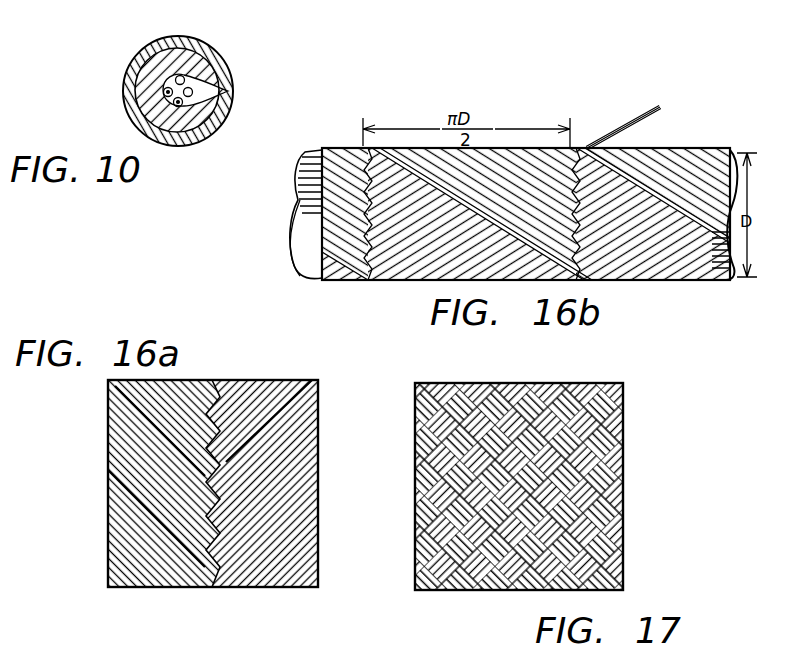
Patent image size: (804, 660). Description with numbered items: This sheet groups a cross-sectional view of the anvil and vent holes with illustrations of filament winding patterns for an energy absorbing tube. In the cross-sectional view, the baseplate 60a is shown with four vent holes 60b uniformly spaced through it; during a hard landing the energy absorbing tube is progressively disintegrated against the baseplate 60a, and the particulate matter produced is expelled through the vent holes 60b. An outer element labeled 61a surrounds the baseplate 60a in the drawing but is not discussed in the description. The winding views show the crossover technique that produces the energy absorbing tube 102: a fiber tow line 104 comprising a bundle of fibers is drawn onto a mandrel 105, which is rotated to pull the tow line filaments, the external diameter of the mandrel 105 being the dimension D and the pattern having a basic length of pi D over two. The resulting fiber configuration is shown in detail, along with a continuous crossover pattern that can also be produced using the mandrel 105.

In FIG. 10, the baseplate 60a is at (191, 65).
In FIG. 10, the vent holes 60b is at (184, 104).
In FIG. 10, the outer sheath 61a is at (124, 100).
In FIG. 16b, the energy absorbing tube 102 is at (694, 139).
In FIG. 16b, the fiber tow line 104 is at (631, 123).
In FIG. 16b, the mandrel 105 is at (304, 185).